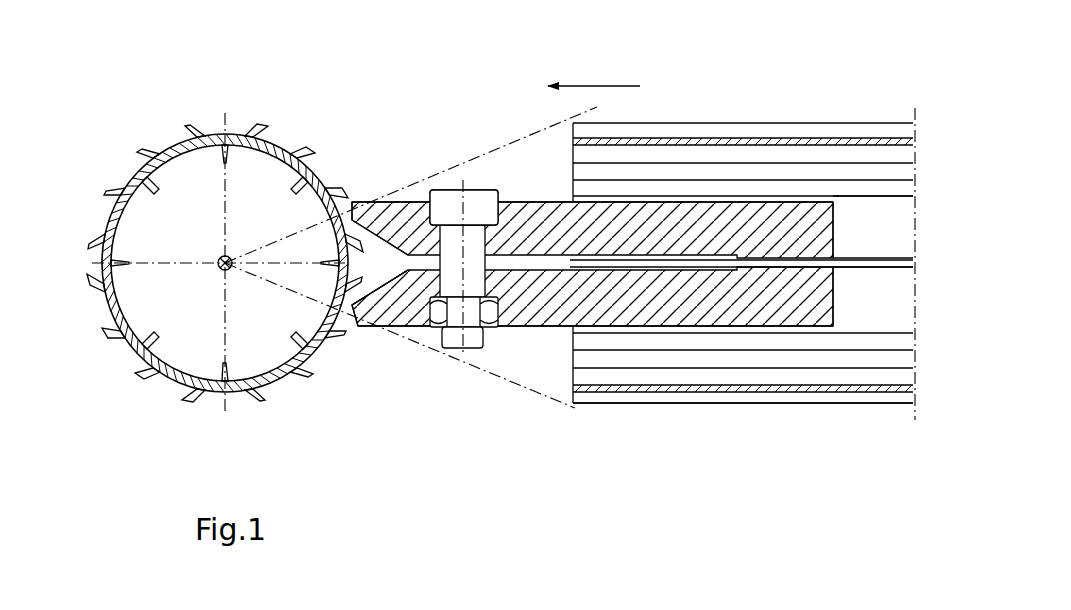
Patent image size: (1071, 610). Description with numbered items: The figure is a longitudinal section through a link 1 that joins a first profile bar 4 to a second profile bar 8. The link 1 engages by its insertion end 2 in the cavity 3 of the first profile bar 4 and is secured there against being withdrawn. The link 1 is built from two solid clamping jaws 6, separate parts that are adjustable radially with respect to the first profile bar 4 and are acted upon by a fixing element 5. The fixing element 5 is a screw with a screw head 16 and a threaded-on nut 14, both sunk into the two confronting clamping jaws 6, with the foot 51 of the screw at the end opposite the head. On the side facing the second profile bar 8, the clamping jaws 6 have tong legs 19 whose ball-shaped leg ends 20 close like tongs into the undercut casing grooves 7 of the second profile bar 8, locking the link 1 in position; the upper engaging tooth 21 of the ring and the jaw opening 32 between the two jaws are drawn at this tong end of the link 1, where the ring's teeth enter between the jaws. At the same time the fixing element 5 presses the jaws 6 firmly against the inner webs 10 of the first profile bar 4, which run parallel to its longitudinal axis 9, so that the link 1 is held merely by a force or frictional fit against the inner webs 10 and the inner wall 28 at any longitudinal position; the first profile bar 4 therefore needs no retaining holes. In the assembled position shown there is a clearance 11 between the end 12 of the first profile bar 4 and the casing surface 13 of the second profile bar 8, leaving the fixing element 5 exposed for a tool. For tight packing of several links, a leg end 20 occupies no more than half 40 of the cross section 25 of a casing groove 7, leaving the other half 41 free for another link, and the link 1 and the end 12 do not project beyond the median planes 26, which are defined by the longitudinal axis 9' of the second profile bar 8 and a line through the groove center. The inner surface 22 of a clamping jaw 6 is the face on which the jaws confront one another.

The link 1 is at (547, 168).
The insertion end 2 is at (702, 195).
The cavity 3 is at (853, 217).
The first profile bar 4 is at (773, 407).
The fixing element 5 is at (477, 187).
The clamping jaws 6 is at (600, 227).
The undercut casing grooves 7 is at (272, 137).
The second profile bar 8 is at (168, 137).
The longitudinal axis 9 is at (594, 45).
The longitudinal axis 9' is at (210, 250).
The inner webs 10 is at (888, 263).
The clearance 11 is at (570, 445).
The end 12 is at (577, 407).
The casing surface 13 is at (170, 385).
The nut 14 is at (490, 316).
The screw head 16 is at (458, 200).
The tong legs 19 is at (370, 302).
The leg ends 20 is at (350, 297).
The upper engaging tooth 21 is at (318, 167).
The inner surface 22 is at (623, 273).
The cross section 25 is at (245, 105).
The median planes 26 is at (503, 380).
The inner wall 28 is at (112, 195).
The jaw opening 32 is at (427, 167).
The half 40 is at (235, 395).
The other half 41 is at (215, 395).
The foot 51 is at (455, 343).